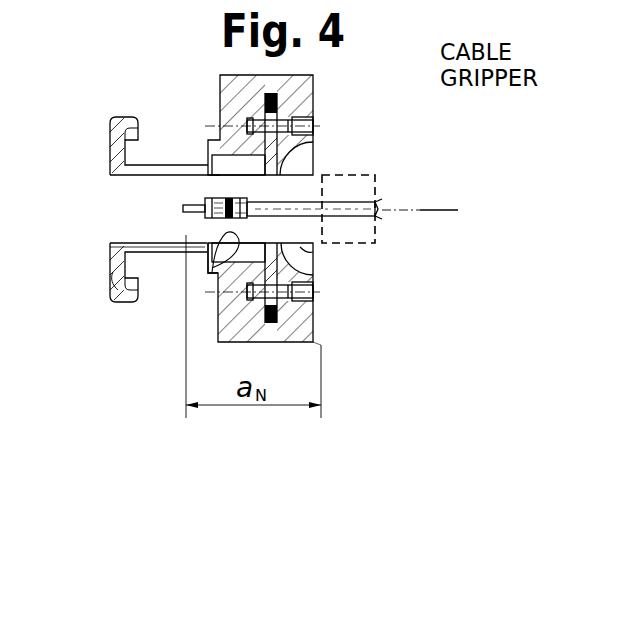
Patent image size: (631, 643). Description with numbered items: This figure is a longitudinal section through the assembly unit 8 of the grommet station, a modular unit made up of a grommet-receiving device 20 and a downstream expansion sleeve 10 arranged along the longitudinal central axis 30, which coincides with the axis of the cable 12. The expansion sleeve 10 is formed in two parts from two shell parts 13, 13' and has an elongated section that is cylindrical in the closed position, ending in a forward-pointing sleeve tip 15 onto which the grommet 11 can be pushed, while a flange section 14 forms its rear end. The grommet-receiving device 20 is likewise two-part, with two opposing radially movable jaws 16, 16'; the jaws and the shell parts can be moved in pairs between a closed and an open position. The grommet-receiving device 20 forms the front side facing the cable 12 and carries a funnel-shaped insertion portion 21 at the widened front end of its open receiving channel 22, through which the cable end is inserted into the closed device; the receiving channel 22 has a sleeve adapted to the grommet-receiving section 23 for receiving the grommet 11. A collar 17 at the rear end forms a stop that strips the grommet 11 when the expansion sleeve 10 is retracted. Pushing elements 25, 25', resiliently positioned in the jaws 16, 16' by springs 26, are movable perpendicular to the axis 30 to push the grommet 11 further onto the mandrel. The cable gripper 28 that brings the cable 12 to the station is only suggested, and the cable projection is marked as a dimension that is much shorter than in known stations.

The assembly unit 8 is at (101, 70).
The expansion sleeve 10 is at (140, 257).
The grommet 11 is at (213, 202).
The cable 12 is at (330, 206).
The shell part 13 is at (133, 306).
The shell part 13' is at (165, 118).
The flange section 14 is at (110, 289).
The sleeve tip 15 is at (204, 172).
The jaw 16 is at (306, 310).
The jaw 16' is at (307, 120).
The collar 17 is at (207, 277).
The grommet-receiving device 20 is at (306, 335).
The funnel-shaped insertion portion 21 is at (312, 263).
The receiving channel 22 is at (223, 222).
The grommet-receiving section 23 is at (262, 258).
The pushing element 25 is at (351, 260).
The pushing element 25' is at (249, 100).
The spring 26 is at (313, 300).
The cable gripper 28 is at (381, 186).
The longitudinal central axis 30 is at (444, 209).